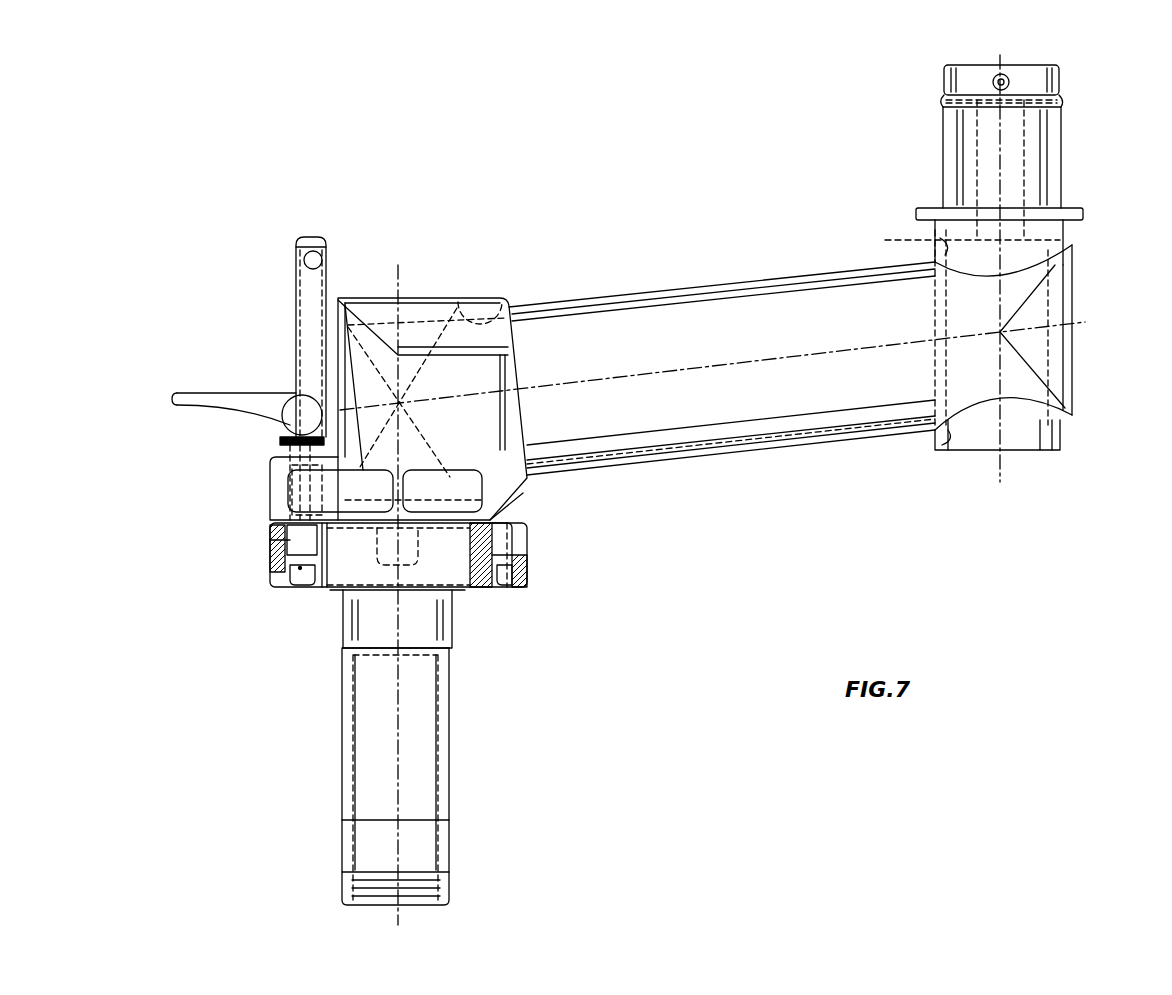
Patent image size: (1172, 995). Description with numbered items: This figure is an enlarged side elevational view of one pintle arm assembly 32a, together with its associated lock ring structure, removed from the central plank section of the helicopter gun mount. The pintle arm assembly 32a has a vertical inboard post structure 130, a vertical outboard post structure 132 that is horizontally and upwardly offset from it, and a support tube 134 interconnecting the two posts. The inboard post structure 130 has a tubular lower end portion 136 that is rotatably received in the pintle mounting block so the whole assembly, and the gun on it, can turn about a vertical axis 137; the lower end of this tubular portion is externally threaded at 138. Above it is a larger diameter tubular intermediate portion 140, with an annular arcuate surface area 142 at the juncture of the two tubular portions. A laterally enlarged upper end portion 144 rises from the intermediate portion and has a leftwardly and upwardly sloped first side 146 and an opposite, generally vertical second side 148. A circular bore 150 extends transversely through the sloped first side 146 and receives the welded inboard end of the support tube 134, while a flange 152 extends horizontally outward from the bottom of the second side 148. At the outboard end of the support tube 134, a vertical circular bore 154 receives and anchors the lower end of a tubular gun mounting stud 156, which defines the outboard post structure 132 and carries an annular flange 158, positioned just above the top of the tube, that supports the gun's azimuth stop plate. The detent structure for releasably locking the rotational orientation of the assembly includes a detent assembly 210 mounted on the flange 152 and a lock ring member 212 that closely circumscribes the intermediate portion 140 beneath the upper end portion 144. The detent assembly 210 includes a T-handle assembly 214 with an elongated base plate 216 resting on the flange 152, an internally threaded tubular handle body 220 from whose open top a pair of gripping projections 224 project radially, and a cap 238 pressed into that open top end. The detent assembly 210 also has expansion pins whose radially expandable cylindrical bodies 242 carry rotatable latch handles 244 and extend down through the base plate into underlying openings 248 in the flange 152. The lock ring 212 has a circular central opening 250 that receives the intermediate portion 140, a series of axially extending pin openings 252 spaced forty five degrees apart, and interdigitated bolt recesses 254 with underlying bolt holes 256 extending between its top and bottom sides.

The pintle arm assembly 32a is at (630, 270).
The vertical inboard post structure 130 is at (433, 747).
The vertical outboard post structure 132 is at (1008, 268).
The support tube 134 is at (740, 448).
The tubular lower end portion 136 is at (452, 780).
The vertical axis 137 is at (398, 268).
The external threads 138 is at (440, 885).
The tubular intermediate portion 140 is at (380, 579).
The annular arcuate surface area 142 is at (455, 592).
The laterally enlarged upper end portion 144 is at (402, 379).
The sloped first side 146 is at (518, 380).
The second side 148 is at (336, 355).
The circular bore 150 is at (513, 310).
The flange 152 is at (354, 482).
The vertical circular bore 154 is at (912, 460).
The tubular gun mounting stud 156 is at (1062, 125).
The annular flange 158 is at (1068, 170).
The detent assembly 210 is at (262, 300).
The lock ring member 212 is at (268, 551).
The T-handle assembly 214 is at (332, 266).
The elongated base plate 216 is at (280, 444).
The tubular handle body 220 is at (296, 290).
The gripping projections 224 is at (305, 257).
The cap 238 is at (311, 237).
The expansion pin bodies 242 is at (300, 572).
The latch handles 244 is at (220, 393).
The openings 248 is at (292, 498).
The circular central opening 250 is at (512, 565).
The pin openings 252 is at (287, 590).
The bolt recesses 254 is at (510, 523).
The bolt holes 256 is at (503, 587).